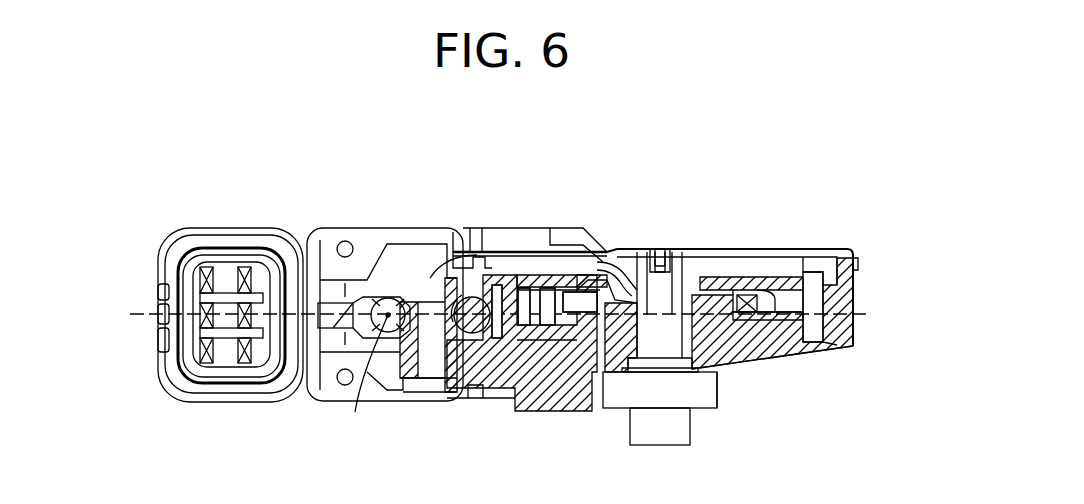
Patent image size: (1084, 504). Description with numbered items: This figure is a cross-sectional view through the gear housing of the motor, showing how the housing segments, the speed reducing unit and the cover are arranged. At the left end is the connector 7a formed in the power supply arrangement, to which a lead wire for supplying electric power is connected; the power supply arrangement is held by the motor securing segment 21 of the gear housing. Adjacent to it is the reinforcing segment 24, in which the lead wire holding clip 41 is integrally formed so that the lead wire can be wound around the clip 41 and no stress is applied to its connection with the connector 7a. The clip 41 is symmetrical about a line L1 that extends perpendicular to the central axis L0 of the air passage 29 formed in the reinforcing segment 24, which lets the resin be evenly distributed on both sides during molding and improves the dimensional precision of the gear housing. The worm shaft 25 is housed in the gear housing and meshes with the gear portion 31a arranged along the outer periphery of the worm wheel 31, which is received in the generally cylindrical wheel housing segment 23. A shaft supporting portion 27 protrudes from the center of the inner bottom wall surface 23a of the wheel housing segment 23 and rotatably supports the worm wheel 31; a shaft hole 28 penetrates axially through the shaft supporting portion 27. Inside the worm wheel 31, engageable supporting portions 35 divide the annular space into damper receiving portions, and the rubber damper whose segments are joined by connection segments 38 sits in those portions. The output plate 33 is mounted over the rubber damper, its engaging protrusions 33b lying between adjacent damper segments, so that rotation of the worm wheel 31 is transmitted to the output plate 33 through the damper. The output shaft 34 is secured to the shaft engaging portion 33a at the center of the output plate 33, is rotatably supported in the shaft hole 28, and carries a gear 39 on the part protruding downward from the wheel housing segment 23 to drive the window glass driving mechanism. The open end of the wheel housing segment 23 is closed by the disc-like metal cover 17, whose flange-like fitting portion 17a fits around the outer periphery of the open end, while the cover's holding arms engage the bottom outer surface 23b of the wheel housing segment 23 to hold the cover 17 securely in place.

The connector 7a is at (187, 393).
The motor securing segment 21 is at (348, 242).
The lead wire holding clip 41 is at (310, 396).
The air passage 29 is at (388, 315).
The central axis L0 is at (360, 381).
The line L1 is at (140, 300).
The reinforcing segment 24 is at (420, 396).
The wheel housing segment 23 is at (542, 412).
The inner bottom wall surface 23a is at (836, 344).
The bottom outer surface 23b is at (810, 363).
The worm shaft 25 is at (466, 298).
The cover 17 is at (722, 249).
The fitting portion 17a is at (858, 264).
The engageable supporting portion 35 is at (522, 288).
The output plate 33 is at (565, 292).
The shaft engaging portion 33a is at (630, 280).
The engaging protrusion 33b is at (795, 290).
The connection segment 38 is at (598, 285).
The shaft supporting portion 27 is at (660, 312).
The shaft hole 28 is at (680, 353).
The output shaft 34 is at (650, 440).
The gear 39 is at (717, 400).
The worm wheel 31 is at (772, 342).
The gear portion 31a is at (826, 318).